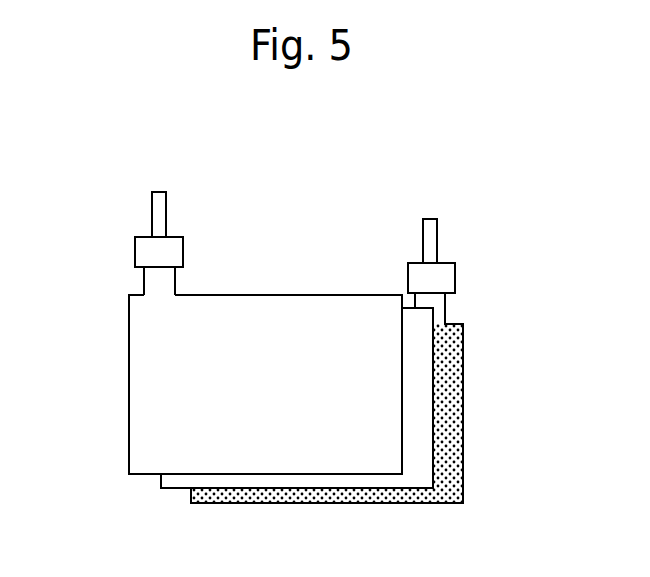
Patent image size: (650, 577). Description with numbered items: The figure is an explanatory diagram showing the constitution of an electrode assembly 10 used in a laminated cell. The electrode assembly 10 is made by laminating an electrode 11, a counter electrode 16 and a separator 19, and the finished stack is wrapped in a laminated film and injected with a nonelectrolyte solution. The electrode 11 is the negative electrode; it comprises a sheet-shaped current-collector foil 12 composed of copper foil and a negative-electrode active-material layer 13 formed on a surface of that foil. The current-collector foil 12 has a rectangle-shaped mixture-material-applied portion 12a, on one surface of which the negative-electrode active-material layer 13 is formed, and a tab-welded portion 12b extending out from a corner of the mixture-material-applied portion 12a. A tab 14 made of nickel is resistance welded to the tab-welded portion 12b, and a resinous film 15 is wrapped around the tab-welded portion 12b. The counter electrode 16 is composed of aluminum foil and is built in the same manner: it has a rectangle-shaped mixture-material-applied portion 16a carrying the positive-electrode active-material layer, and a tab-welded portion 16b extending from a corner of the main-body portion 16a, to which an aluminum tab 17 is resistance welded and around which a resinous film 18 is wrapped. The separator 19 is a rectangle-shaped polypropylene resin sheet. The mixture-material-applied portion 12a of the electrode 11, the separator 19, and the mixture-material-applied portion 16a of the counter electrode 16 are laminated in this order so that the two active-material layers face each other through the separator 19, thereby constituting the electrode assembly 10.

The electrode assembly 10 is at (323, 223).
The electrode 11 is at (493, 433).
The current-collector foil 12 is at (400, 341).
The mixture-material-applied portion 12a is at (463, 357).
The tab-welded portion 12b is at (445, 306).
The negative-electrode active-material layer 13 is at (447, 395).
The tab 14 is at (429, 249).
The resinous film 15 is at (445, 278).
The counter electrode 16 is at (212, 311).
The mixture-material-applied portion 16a is at (129, 332).
The tab-welded portion 16b is at (144, 282).
The tab 17 is at (157, 219).
The resinous film 18 is at (173, 250).
The separator 19 is at (178, 498).